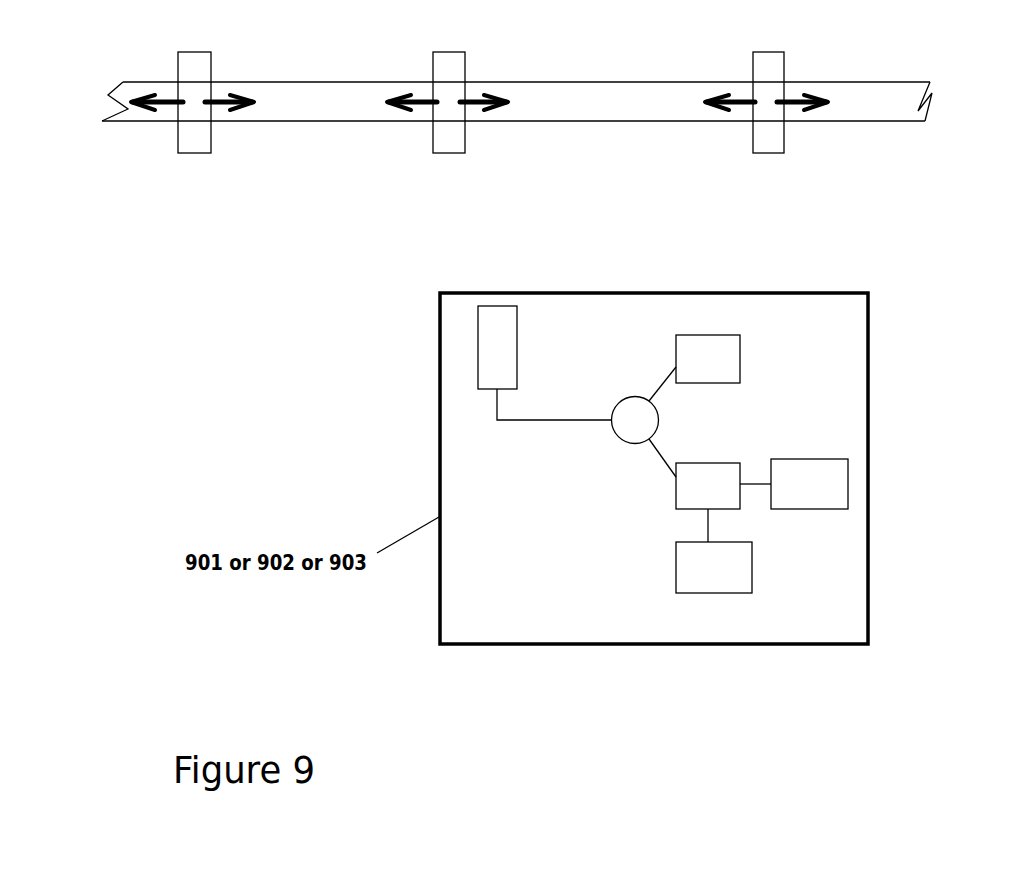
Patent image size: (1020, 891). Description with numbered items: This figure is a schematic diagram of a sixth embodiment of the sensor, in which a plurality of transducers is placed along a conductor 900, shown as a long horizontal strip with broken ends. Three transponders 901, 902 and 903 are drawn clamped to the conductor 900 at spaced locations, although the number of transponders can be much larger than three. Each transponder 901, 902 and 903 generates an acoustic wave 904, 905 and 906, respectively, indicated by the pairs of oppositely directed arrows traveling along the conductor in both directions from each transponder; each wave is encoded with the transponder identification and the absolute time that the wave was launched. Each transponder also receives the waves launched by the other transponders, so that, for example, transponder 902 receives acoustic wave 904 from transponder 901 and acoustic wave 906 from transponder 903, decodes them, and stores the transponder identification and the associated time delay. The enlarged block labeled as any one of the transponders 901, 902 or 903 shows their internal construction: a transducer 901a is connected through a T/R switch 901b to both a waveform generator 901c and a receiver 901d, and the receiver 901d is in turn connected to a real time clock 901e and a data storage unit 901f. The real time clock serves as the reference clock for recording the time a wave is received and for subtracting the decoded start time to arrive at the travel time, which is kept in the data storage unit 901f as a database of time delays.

The transmission medium / bus 900 is at (126, 108).
The transponder 901 is at (192, 140).
The transponder 902 is at (453, 140).
The transponder 903 is at (765, 140).
The acoustic wave 904 is at (170, 100).
The acoustic wave 905 is at (470, 100).
The acoustic wave 906 is at (792, 98).
The transducer 901a is at (504, 352).
The T/R switch 901b is at (630, 420).
The waveform generator 901c is at (708, 359).
The receiver 901d is at (708, 486).
The real time clock 901e is at (809, 484).
The data storage unit 901f is at (714, 567).